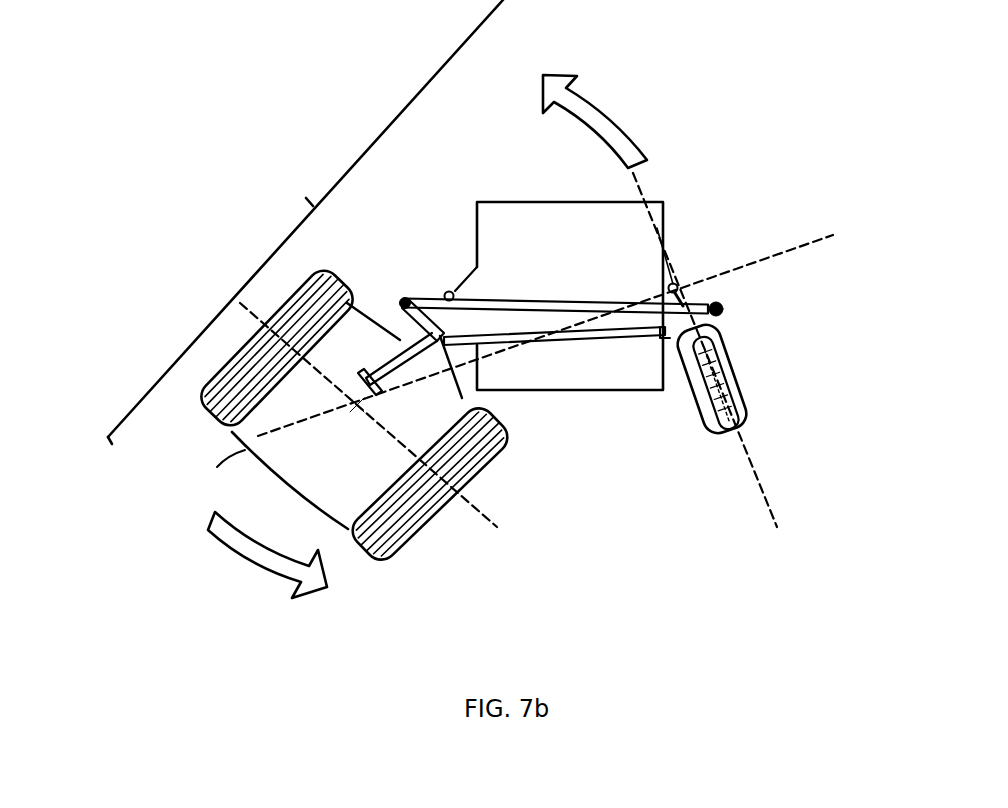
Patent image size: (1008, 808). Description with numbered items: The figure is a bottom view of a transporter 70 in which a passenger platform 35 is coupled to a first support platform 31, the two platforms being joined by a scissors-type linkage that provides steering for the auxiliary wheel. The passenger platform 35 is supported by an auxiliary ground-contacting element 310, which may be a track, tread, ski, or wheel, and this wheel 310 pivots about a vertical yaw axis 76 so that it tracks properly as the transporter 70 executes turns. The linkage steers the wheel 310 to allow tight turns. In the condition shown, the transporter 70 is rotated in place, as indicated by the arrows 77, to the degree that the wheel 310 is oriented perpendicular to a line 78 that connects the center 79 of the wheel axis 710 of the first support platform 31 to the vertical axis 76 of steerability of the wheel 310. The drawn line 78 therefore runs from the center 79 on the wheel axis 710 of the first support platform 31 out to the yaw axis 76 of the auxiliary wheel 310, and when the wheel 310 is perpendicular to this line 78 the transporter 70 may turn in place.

The transporter 70 is at (305, 222).
The first support platform 31 is at (368, 313).
The passenger platform 35 is at (493, 187).
The arrows 77 is at (600, 110).
The vertical (yaw) axis 76 is at (677, 280).
The line 78 is at (795, 248).
The center 79 is at (351, 415).
The wheel axis 710 is at (475, 522).
The auxiliary ground-contacting element 310 is at (722, 438).